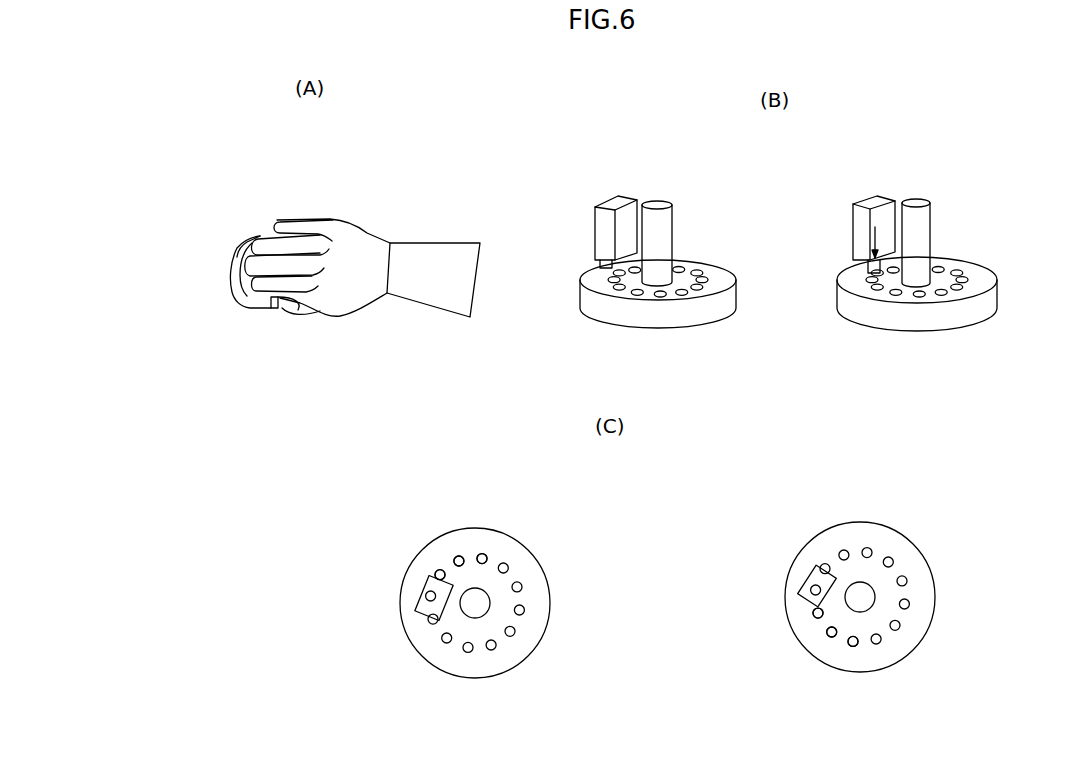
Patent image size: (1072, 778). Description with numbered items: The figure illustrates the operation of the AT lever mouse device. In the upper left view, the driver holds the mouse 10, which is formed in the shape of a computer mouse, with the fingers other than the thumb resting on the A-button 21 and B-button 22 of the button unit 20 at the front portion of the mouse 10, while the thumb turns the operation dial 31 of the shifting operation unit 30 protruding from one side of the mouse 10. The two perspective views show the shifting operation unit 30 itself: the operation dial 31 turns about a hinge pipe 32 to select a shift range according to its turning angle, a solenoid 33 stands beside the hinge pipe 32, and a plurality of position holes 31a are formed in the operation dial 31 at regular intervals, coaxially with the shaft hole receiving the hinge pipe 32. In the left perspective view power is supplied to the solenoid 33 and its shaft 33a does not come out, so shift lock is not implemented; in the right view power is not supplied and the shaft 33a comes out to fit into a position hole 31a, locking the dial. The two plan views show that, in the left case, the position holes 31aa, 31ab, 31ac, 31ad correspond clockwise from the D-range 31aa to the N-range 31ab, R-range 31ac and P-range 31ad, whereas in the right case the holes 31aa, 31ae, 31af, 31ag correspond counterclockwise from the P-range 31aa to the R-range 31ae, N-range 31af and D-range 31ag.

The mouse 10 is at (247, 307).
The button unit 20 is at (242, 216).
The A-button 21 is at (237, 257).
The B-button 22 is at (242, 242).
The shifting operation unit 30 is at (280, 307).
The operation dial 31 is at (717, 273).
The position holes 31a is at (697, 273).
The D-range position hole 31aa is at (417, 597).
The N-range position hole 31ab is at (440, 575).
The R-range position hole 31ac is at (457, 561).
The P-range position hole 31ad is at (481, 555).
The R-range position hole 31ae is at (814, 613).
The N-range position hole 31af is at (828, 632).
The D-range position hole 31ag is at (850, 645).
The hinge pipe 32 is at (670, 223).
The solenoid 33 is at (600, 223).
The shaft of solenoid 33a is at (618, 265).